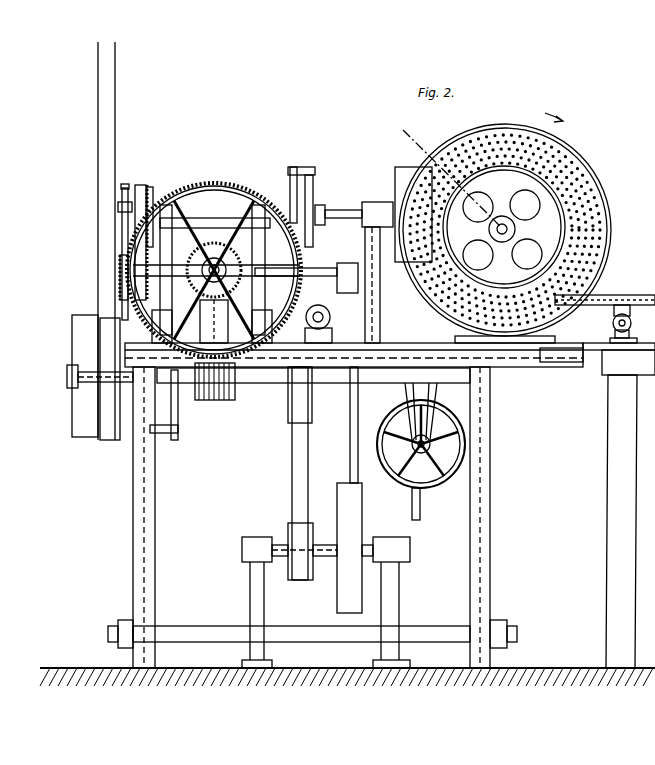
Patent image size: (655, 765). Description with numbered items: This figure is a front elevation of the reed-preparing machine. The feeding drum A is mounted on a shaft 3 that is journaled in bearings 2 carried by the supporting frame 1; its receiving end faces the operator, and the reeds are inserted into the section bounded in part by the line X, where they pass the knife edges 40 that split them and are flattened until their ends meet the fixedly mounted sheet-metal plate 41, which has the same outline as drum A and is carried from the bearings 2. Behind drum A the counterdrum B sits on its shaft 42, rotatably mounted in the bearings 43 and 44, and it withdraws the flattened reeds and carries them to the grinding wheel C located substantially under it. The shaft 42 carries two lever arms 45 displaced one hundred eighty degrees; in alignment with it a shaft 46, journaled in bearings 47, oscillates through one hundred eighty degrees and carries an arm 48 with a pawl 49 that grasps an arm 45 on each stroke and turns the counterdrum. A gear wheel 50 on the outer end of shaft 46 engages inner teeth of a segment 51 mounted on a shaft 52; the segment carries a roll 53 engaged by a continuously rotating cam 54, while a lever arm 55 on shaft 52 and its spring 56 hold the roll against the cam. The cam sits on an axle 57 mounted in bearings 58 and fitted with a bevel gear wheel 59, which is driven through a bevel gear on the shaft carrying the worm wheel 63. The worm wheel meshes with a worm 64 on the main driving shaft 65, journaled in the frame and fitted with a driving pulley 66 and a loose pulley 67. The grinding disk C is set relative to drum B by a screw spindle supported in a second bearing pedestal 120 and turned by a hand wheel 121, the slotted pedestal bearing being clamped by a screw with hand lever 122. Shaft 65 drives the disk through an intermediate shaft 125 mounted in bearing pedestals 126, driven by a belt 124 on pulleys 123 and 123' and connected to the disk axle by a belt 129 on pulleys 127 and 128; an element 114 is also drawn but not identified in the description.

The supporting frame 1 is at (577, 354).
The bearings 2 is at (502, 254).
The shaft 3 is at (513, 234).
The feeding drum A is at (578, 160).
The counterdrum B is at (403, 172).
The grinding wheel C is at (537, 113).
The section line X— X is at (445, 173).
The knife edges 40 is at (214, 265).
The sheet-metal plate 41 is at (258, 262).
The shaft 42 is at (342, 210).
The bearing 43 is at (372, 203).
The bearing 44 is at (480, 205).
The lever arms 45 is at (312, 203).
The shaft 46 is at (226, 212).
The bearings 47 is at (166, 262).
The arm 48 is at (290, 190).
The pawl 49 is at (308, 167).
The gear wheel 50 is at (150, 186).
The segment 51 is at (140, 184).
The shaft 52 is at (204, 318).
The roll 53 is at (118, 208).
The cam 54 is at (122, 232).
The lever arm 55 is at (178, 393).
The spring 56 is at (180, 430).
The axle 57 is at (122, 272).
The bearings 58 is at (161, 318).
The bevel gear wheel 59 is at (262, 318).
The worm wheel 63 is at (203, 183).
The worm 64 is at (226, 397).
The main driving shaft 65 is at (67, 377).
The driving pulley 66 is at (108, 440).
The loose pulley 67 is at (78, 440).
The link 114 is at (332, 272).
The second bearing pedestal 120 is at (406, 390).
The hand wheel 121 is at (428, 472).
The hand lever 122 is at (420, 510).
The pulley 123 is at (277, 403).
The pulley 123' is at (276, 541).
The belt 124 is at (292, 463).
The intermediate shaft 125 is at (310, 556).
The bearing pedestals 126 is at (250, 592).
The pulley 127 is at (362, 478).
The pulley 128 is at (346, 263).
The belt 129 is at (350, 410).